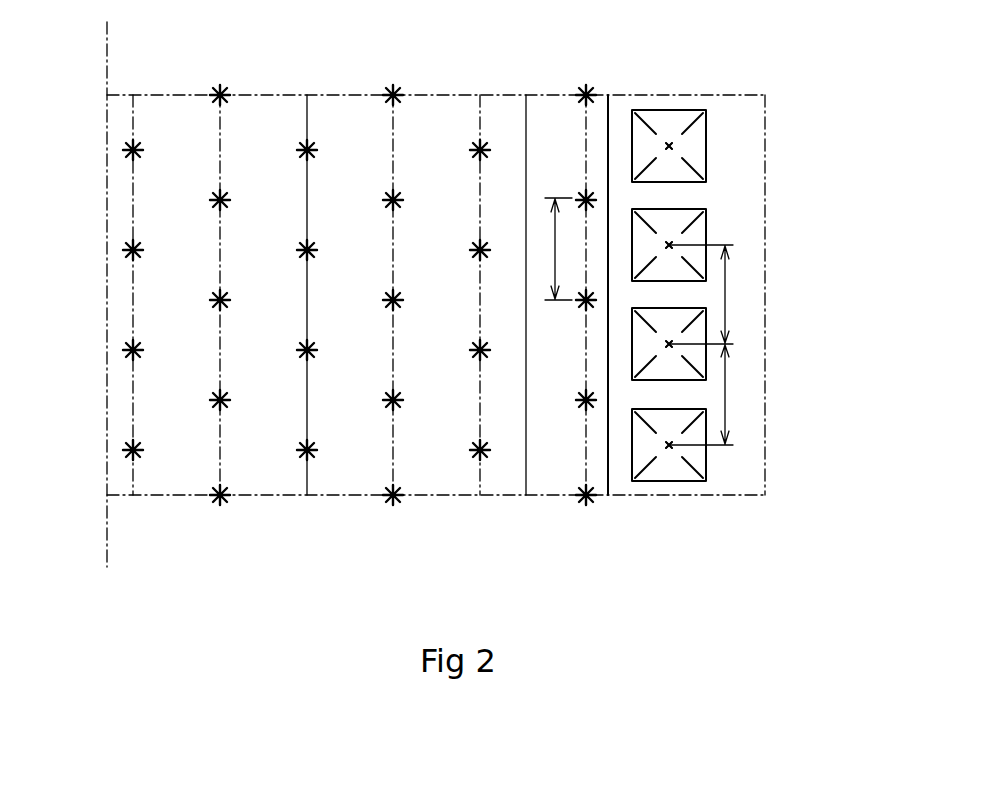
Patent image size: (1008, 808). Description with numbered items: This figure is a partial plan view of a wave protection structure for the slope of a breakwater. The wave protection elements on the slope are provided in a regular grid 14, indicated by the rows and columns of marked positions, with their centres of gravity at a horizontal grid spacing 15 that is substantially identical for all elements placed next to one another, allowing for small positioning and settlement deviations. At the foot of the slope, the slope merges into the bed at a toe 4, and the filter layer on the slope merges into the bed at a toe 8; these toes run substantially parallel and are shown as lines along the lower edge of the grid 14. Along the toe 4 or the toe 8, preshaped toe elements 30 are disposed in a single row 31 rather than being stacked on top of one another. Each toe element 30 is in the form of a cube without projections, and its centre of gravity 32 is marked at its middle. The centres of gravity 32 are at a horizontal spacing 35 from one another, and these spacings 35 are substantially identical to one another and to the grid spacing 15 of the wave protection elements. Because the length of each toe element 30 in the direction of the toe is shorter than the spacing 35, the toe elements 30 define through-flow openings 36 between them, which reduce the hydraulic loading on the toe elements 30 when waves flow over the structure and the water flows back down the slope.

The toe 4 is at (543, 472).
The toe 8 is at (618, 514).
The regular grid 14 is at (316, 516).
The horizontal grid spacing 15 is at (553, 232).
The toe element 30 is at (733, 130).
The row 31 is at (672, 533).
The centre of gravity 32 is at (669, 146).
The horizontal spacing 35 is at (727, 300).
The through-flow opening 36 is at (721, 186).